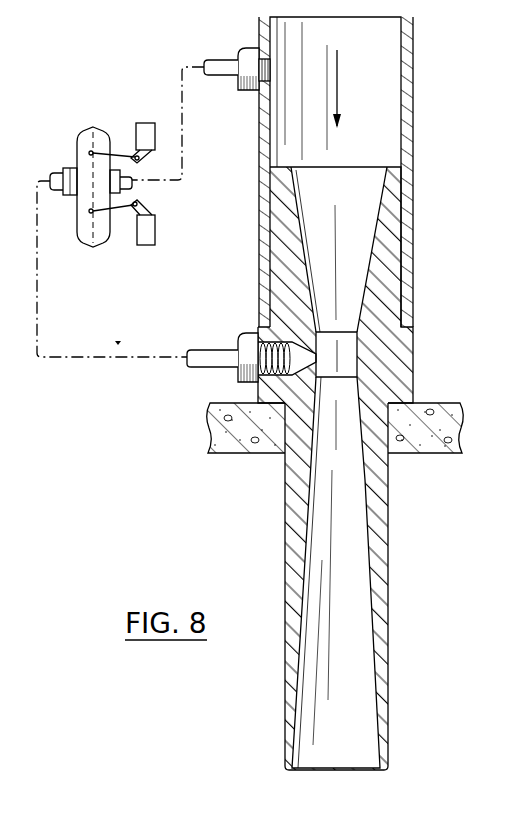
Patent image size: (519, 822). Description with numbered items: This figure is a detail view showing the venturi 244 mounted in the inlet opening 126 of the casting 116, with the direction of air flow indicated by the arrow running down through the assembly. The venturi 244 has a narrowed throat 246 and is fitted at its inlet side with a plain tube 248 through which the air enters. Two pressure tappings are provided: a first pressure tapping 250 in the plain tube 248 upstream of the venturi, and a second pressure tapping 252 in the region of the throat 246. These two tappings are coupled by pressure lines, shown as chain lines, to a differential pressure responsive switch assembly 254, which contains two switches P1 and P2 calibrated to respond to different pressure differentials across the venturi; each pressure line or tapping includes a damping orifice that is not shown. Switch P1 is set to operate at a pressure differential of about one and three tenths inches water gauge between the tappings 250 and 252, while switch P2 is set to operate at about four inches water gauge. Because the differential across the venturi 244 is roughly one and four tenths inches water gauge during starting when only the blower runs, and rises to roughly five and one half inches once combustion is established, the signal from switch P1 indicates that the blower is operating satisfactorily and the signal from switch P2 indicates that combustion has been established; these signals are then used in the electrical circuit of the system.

The casting 116 is at (240, 455).
The inlet opening 126 is at (287, 450).
The venturi 244 is at (366, 468).
The throat 246 is at (346, 352).
The plain tube 248 is at (407, 108).
The pressure tapping 250 is at (250, 60).
The pressure tapping 252 is at (250, 345).
The differential pressure responsive switch assembly 254 is at (104, 120).
The switch P1 is at (143, 130).
The switch P2 is at (150, 232).